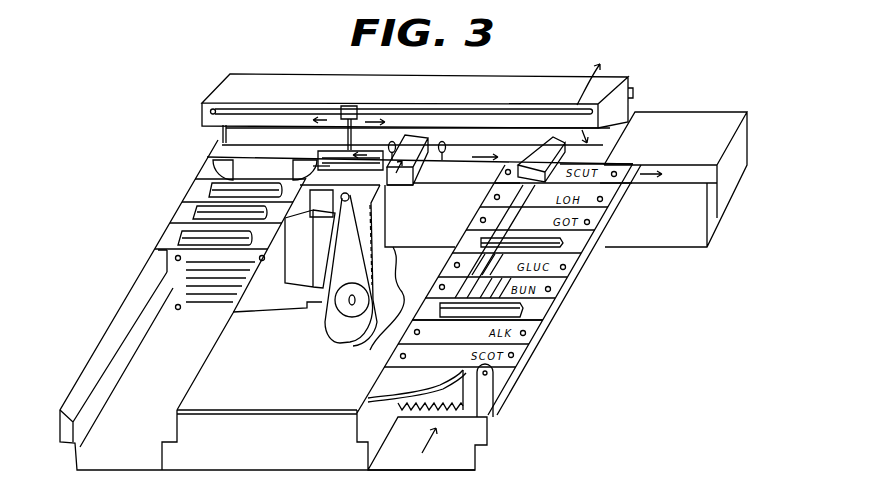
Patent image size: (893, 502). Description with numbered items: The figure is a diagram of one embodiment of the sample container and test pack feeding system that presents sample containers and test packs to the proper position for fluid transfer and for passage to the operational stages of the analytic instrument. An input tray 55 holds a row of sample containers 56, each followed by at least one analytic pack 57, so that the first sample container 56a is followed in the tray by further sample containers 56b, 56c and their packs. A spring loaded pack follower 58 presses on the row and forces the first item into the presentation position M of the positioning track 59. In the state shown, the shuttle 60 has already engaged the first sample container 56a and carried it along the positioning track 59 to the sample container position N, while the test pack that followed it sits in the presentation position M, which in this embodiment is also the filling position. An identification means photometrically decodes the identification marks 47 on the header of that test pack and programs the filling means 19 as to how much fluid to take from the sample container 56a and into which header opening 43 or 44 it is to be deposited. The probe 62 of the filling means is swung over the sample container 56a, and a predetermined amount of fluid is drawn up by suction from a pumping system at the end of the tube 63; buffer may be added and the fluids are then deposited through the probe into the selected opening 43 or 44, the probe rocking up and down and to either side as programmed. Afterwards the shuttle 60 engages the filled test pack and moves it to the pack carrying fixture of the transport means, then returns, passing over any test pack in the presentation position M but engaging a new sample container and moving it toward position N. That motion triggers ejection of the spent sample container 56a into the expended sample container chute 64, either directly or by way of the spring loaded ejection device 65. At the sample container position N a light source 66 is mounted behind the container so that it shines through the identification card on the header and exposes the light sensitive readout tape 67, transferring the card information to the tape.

The filling means 19 is at (500, 75).
The tube 63 is at (348, 106).
The light source 66 is at (316, 157).
The first sample container 56a is at (318, 166).
The pusher plate 62 is at (352, 148).
The shuttle 60 is at (410, 150).
The presentation position M is at (544, 147).
The sample container position N is at (389, 185).
The opening 44 is at (504, 172).
The spring loaded ejection device 65 is at (240, 168).
The sample containers 56 is at (182, 225).
The expended sample container chute 64 is at (78, 377).
The light sensitive readout tape 67 is at (331, 214).
The identification marks 47 is at (570, 165).
The opening 43 is at (618, 170).
The analytic pack 57 is at (590, 223).
The positioning track 59 is at (700, 177).
The strip holder 56b is at (580, 247).
The strip holder 56c is at (525, 333).
The spring loaded pack follower 58 is at (408, 397).
The input tray 55 is at (512, 413).